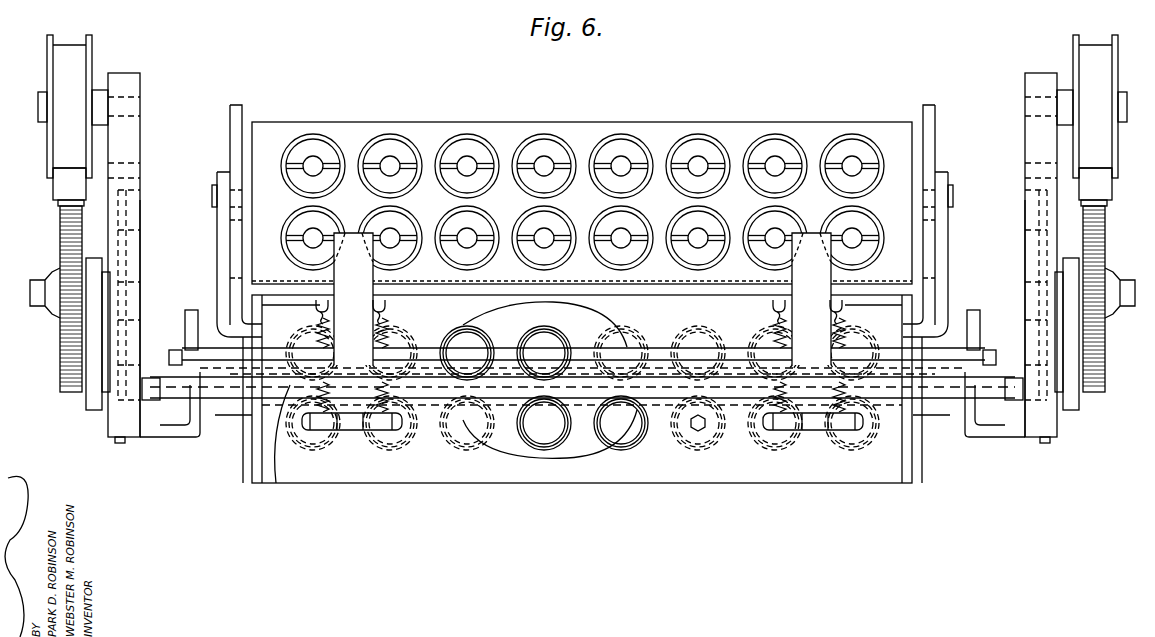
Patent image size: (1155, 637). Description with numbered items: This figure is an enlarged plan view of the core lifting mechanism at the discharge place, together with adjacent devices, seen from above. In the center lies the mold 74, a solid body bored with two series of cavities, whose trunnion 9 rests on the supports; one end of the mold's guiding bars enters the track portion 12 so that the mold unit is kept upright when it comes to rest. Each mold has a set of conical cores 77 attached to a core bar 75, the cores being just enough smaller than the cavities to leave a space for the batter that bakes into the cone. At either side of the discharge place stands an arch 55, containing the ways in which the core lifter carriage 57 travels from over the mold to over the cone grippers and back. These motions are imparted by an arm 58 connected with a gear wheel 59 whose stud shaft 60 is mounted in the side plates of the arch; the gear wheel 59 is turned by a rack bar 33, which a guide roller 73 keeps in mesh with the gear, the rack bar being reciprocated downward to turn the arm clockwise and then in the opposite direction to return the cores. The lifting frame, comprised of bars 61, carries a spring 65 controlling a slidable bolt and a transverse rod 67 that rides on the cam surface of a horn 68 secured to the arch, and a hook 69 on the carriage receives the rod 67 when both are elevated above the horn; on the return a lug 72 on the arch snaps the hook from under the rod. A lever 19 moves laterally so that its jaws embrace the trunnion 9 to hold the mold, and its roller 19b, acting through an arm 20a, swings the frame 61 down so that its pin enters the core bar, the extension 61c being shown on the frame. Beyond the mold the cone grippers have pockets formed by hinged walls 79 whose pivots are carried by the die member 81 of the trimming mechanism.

The trunnion 9 is at (236, 424).
The track portion 12 is at (133, 192).
The lever 19 is at (236, 105).
The roller 19b is at (212, 195).
The arm 20a is at (217, 232).
The rack bar 33 is at (75, 183).
The arch 55 is at (140, 268).
The carriage 57 is at (275, 483).
The arm 58 is at (86, 412).
The gear wheel 59 is at (60, 392).
The stud shaft 60 is at (130, 312).
The lifting frame bar 61 is at (808, 232).
The post extension 61c is at (353, 232).
The spring 65 is at (394, 327).
The transverse rod 67 is at (182, 352).
The horn 68 is at (196, 437).
The hook 69 is at (180, 428).
The lug 72 is at (150, 432).
The guide roller 73 is at (93, 48).
The mold 74 is at (553, 450).
The core bar 75 is at (650, 482).
The conical core 77 is at (525, 440).
The gripper wall 79 is at (765, 155).
The die member 81 is at (643, 122).